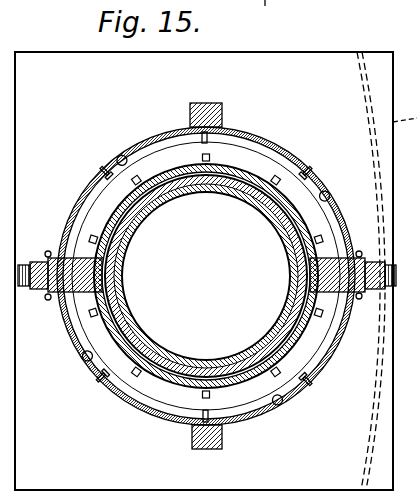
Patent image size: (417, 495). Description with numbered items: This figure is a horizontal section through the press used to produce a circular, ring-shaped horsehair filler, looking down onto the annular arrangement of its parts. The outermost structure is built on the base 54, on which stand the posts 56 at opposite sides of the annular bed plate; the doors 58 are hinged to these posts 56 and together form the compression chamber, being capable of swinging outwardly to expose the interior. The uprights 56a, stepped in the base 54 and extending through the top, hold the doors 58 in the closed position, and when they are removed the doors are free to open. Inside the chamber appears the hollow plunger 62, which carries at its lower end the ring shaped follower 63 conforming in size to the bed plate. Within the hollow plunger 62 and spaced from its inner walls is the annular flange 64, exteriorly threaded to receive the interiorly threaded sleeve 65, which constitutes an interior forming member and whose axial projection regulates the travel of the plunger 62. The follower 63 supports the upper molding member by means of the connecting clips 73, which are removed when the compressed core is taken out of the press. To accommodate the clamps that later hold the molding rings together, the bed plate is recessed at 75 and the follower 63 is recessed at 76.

The base 54 is at (204, 245).
The posts 56 is at (43, 291).
The uprights 56a is at (209, 103).
The doors 58 is at (93, 190).
The hollow plunger 62 is at (236, 172).
The ring shaped follower 63 is at (310, 191).
The annular flange 64 is at (278, 227).
The sleeve 65 is at (131, 237).
The connecting clips 73 is at (184, 143).
The recess 75 is at (269, 16).
The recess 76 is at (124, 156).